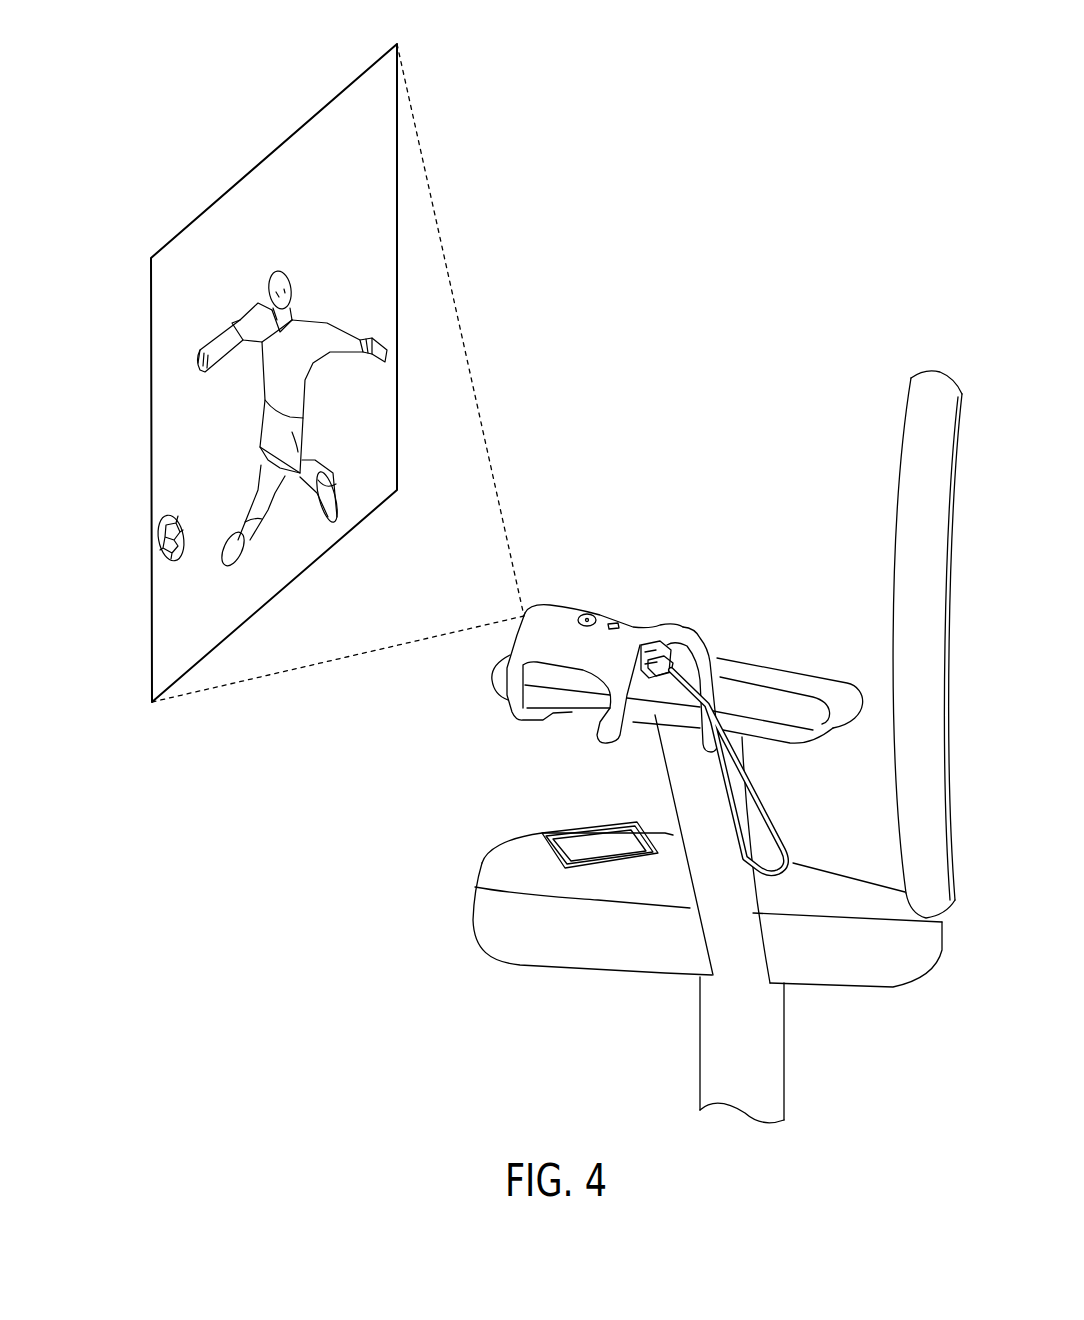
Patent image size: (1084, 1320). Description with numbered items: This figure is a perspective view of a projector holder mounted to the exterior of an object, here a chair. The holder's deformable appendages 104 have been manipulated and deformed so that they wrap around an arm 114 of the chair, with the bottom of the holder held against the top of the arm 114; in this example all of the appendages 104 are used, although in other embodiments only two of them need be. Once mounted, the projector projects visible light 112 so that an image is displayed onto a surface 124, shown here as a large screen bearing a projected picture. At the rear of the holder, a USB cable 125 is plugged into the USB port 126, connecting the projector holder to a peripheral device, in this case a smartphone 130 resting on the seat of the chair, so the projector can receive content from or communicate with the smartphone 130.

The appendages 104 is at (517, 667).
The visible light 112 is at (492, 457).
The arm 114 is at (587, 705).
The surface 124 is at (178, 272).
The USB cable 125 is at (763, 807).
The USB port 126 is at (660, 643).
The smartphone 130 is at (572, 838).